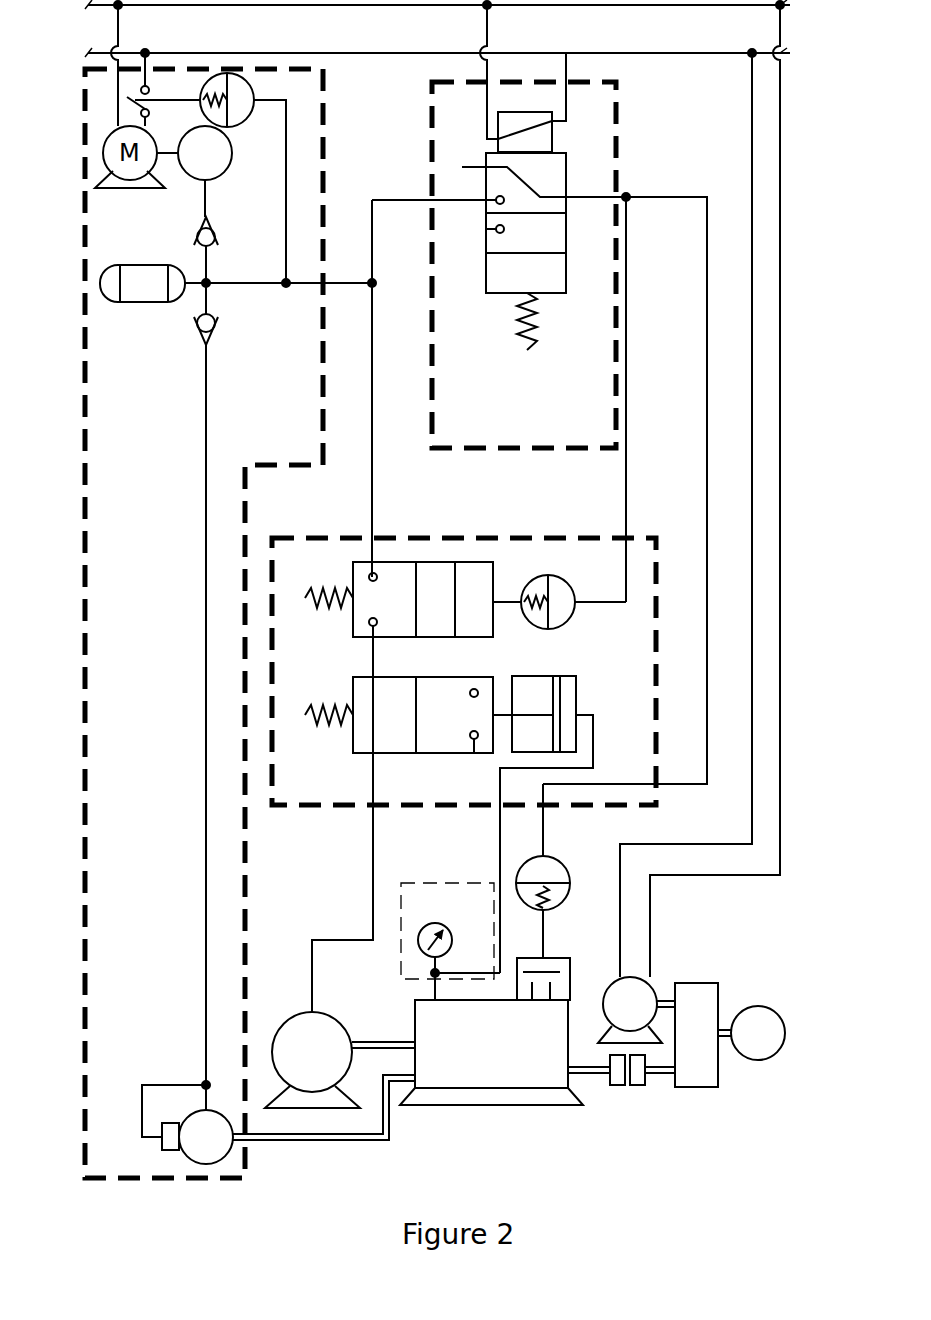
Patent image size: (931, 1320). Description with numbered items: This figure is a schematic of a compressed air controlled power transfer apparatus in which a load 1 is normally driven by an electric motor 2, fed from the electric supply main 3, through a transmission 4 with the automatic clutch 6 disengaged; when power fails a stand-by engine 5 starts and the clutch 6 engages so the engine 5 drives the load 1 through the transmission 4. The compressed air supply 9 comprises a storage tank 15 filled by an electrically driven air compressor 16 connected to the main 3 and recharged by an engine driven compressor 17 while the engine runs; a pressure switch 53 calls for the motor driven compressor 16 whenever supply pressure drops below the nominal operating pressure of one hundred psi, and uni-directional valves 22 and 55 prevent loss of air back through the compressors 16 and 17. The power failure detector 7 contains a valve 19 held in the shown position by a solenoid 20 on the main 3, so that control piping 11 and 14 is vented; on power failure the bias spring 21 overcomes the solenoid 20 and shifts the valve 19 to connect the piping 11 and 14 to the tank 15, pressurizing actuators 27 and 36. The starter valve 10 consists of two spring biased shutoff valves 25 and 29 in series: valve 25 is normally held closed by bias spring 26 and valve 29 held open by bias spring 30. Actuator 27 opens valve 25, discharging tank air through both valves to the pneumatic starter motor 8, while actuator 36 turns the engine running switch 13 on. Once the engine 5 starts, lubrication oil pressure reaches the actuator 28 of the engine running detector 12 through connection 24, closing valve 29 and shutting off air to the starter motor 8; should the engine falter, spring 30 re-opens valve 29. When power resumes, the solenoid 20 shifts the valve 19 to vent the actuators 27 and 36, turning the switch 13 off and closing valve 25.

The load 1 is at (766, 1006).
The motor 2 is at (652, 984).
The electric supply main 3 is at (695, 51).
The transmission 4 is at (710, 983).
The stand-by engine 5 is at (470, 1107).
The clutch 6 is at (628, 1088).
The power failure detector 7 is at (620, 92).
The pneumatic starter motor 8 is at (346, 1026).
The compressed air supply 9 is at (313, 470).
The starter valve 10 is at (496, 539).
The operative connection 11 is at (628, 400).
The engine running detector 12 is at (438, 883).
The engine running switch 13 is at (551, 958).
The operative connection 14 is at (705, 477).
The storage tank 15 is at (152, 268).
The electrically driven air compressor 16 is at (233, 153).
The engine driven compressor 17 is at (190, 1152).
The power failure detector valve 19 is at (566, 176).
The solenoid 20 is at (553, 140).
The bias spring 21 is at (540, 331).
The uni-directional valve 22 is at (216, 231).
The connection 24 is at (490, 972).
The shutoff valve 25 is at (400, 563).
The bias spring 26 is at (325, 592).
The actuator 27 is at (566, 582).
The actuator 28 is at (580, 700).
The shutoff valve 29 is at (400, 677).
The bias spring 30 is at (325, 708).
The actuator 36 is at (552, 862).
The pressure switch 53 is at (254, 96).
The uni-directional valve 55 is at (220, 330).